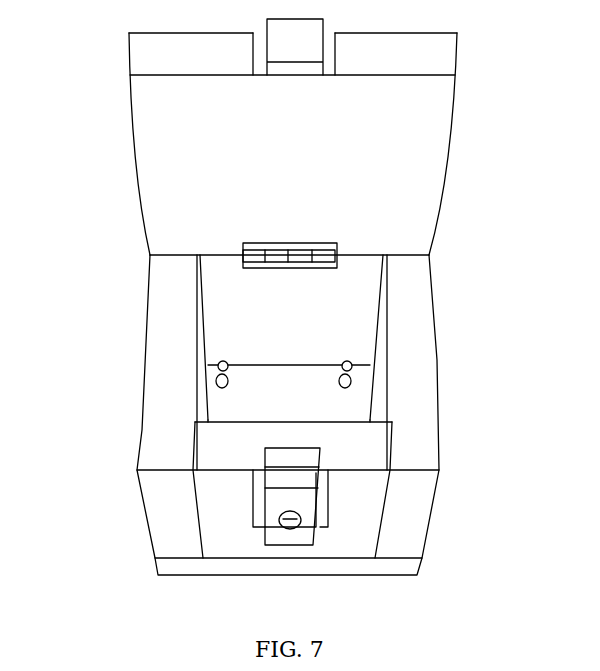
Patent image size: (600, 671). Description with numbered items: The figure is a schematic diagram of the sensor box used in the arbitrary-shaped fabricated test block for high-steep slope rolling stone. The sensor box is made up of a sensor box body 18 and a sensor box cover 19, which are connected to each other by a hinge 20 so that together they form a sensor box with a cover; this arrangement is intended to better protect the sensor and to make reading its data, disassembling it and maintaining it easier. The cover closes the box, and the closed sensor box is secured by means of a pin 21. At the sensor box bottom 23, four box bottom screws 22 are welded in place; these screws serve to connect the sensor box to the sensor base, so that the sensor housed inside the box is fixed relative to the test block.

The sensor box body 18 is at (420, 380).
The sensor box cover 19 is at (403, 172).
The hinge 20 is at (337, 255).
The pin 21 is at (300, 45).
The box bottom screw 22 is at (338, 372).
The sensor box bottom 23 is at (285, 410).